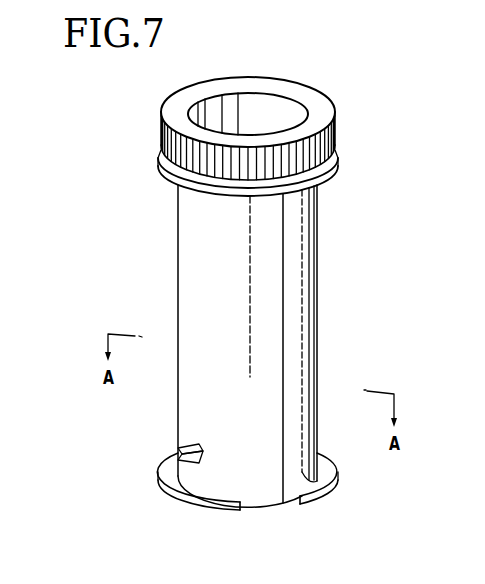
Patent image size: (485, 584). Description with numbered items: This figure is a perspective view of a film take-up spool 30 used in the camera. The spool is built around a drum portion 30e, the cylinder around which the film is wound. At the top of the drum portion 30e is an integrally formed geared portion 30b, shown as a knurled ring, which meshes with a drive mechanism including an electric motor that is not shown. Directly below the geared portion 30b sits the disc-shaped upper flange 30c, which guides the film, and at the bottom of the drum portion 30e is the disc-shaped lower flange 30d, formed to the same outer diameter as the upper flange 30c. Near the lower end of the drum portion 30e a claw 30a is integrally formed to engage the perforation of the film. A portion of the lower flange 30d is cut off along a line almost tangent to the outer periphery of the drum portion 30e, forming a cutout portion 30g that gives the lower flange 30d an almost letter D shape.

The film take-up spool 30 is at (329, 291).
The claw 30a is at (174, 449).
The geared portion 30b is at (334, 148).
The upper flange 30c is at (337, 161).
The lower flange 30d is at (161, 504).
The drum portion 30e is at (304, 367).
The cutout portion 30g is at (266, 513).